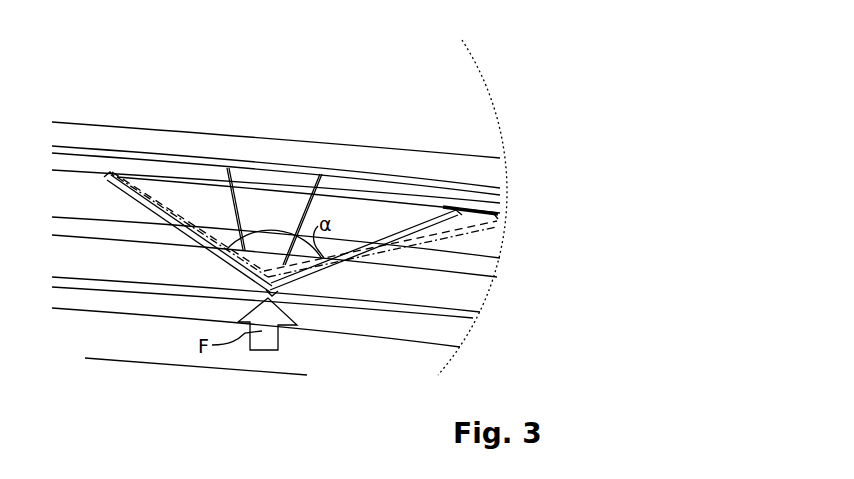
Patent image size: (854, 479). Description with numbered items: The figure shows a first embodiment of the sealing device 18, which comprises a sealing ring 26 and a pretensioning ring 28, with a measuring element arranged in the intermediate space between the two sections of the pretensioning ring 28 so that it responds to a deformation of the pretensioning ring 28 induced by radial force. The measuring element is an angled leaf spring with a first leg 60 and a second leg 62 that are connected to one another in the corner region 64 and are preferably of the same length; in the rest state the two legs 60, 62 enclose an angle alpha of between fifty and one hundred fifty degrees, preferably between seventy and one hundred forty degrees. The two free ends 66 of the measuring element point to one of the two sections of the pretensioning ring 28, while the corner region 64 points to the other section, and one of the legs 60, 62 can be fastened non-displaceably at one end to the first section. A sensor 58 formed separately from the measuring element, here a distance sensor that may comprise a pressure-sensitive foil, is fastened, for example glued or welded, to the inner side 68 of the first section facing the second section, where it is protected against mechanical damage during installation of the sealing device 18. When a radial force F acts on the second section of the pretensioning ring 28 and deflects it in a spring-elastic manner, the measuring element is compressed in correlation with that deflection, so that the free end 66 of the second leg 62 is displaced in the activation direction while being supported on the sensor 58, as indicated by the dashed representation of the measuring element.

The sealing device 18 is at (613, 112).
The sealing ring 26 is at (494, 168).
The pretensioning ring 28 is at (498, 203).
The sensor 58 is at (456, 208).
The first leg 60 is at (208, 237).
The second leg 62 is at (445, 212).
The corner region 64 is at (283, 290).
The free ends 66 is at (102, 176).
The inner side 68 is at (347, 202).